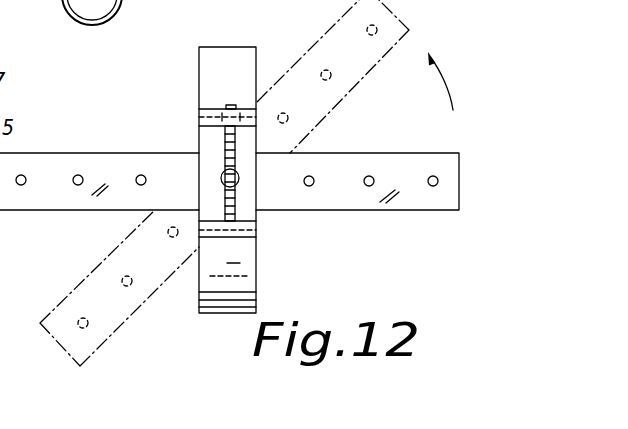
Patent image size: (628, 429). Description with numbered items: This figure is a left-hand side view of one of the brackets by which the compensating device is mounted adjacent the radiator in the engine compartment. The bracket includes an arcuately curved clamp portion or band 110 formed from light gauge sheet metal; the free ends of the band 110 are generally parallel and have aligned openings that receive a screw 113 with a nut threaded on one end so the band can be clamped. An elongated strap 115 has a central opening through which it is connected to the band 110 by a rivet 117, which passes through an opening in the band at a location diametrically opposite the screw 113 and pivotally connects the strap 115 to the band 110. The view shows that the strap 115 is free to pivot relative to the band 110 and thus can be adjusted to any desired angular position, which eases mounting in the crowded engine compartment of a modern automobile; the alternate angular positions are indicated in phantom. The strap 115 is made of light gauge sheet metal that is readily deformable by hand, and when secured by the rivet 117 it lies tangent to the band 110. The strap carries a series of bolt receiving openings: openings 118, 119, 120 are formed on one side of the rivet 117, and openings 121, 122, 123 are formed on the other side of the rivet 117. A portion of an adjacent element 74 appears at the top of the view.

The roller 74 is at (123, 0).
The band 110 is at (247, 265).
The screw 113 is at (226, 137).
The strap 115 is at (340, 196).
The rivet 117 is at (239, 178).
The bolt receiving opening 118 is at (22, 175).
The bolt receiving opening 119 is at (78, 175).
The bolt receiving opening 120 is at (141, 186).
The bolt receiving opening 121 is at (309, 176).
The bolt receiving opening 122 is at (369, 176).
The bolt receiving opening 123 is at (433, 176).